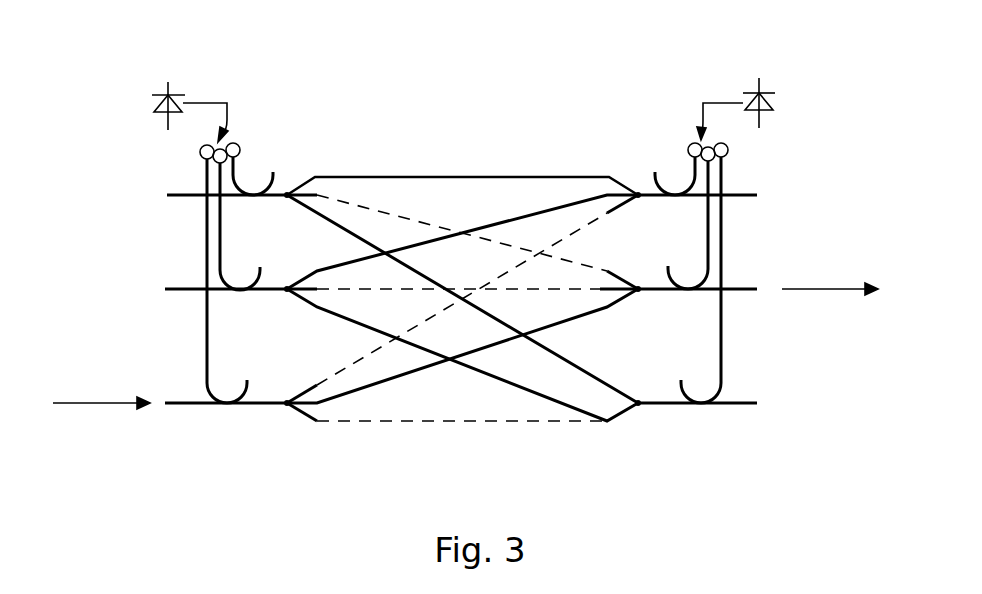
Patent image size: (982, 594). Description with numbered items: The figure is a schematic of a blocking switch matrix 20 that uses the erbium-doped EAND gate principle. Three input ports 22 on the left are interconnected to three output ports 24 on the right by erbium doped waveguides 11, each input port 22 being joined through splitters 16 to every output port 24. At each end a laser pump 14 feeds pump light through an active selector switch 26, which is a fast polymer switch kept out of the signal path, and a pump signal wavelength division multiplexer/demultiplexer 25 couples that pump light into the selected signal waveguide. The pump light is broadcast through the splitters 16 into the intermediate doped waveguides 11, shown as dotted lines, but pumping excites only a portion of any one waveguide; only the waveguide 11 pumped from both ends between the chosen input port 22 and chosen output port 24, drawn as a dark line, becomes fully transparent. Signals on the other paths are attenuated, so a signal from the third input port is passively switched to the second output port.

The erbium doped waveguides 11 is at (470, 177).
The laser pump 14 is at (460, 101).
The splitters 16 is at (304, 183).
The blocking switch matrix 20 is at (800, 393).
The input ports 22 is at (159, 298).
The output ports 24 is at (753, 266).
The pump signal wavelength division multiplexer/demultiplexer 25 is at (253, 197).
The active selector switch 26 is at (464, 84).